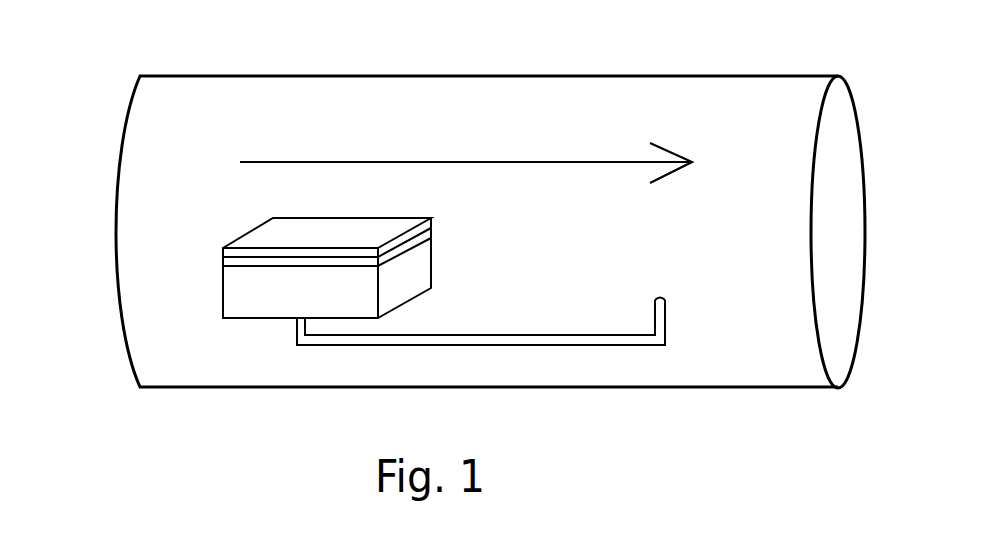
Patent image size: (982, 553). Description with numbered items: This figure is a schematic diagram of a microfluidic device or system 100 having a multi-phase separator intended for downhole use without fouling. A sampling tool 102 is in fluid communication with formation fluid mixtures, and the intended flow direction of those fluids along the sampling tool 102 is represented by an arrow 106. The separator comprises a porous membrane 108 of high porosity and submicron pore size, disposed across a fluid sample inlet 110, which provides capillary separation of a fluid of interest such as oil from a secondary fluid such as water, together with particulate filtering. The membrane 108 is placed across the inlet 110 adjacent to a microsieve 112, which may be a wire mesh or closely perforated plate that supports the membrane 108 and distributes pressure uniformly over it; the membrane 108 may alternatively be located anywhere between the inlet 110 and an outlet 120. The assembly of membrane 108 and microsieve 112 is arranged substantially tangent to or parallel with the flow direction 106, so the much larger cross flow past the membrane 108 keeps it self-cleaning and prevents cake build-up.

The microfluidic device or system 100 is at (458, 199).
The sampling tool 102 is at (227, 73).
The arrow 106 is at (292, 160).
The porous membrane 108 is at (336, 243).
The fluid sample inlet 110 is at (378, 200).
The microsieve 112 is at (222, 262).
The outlet 120 is at (660, 296).